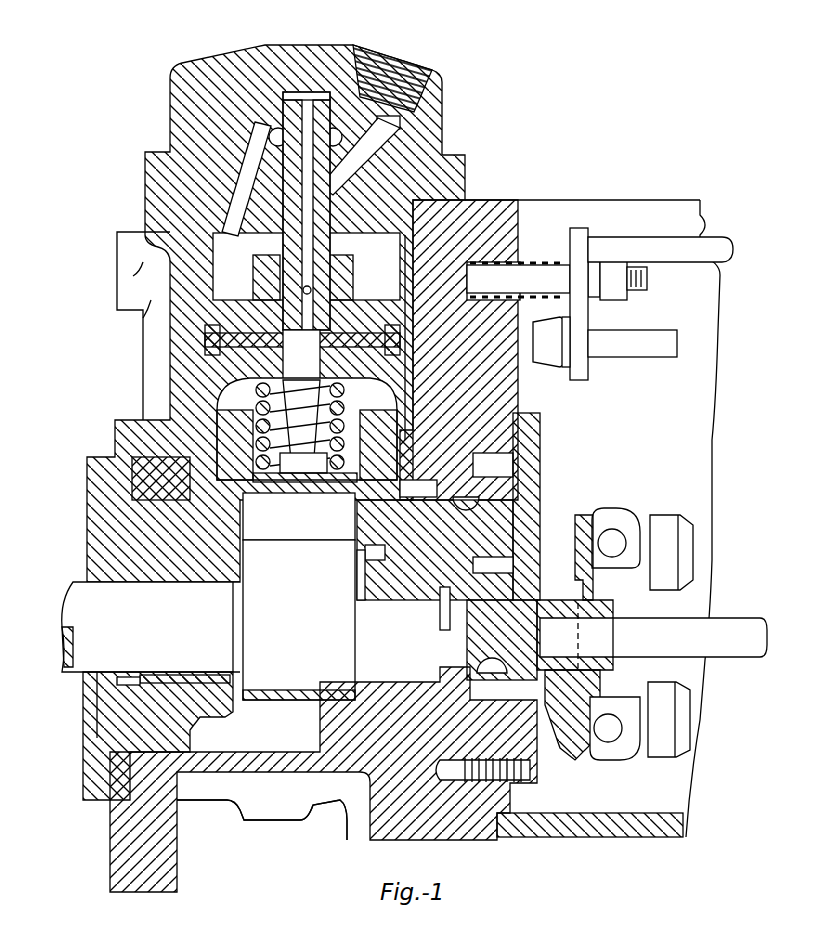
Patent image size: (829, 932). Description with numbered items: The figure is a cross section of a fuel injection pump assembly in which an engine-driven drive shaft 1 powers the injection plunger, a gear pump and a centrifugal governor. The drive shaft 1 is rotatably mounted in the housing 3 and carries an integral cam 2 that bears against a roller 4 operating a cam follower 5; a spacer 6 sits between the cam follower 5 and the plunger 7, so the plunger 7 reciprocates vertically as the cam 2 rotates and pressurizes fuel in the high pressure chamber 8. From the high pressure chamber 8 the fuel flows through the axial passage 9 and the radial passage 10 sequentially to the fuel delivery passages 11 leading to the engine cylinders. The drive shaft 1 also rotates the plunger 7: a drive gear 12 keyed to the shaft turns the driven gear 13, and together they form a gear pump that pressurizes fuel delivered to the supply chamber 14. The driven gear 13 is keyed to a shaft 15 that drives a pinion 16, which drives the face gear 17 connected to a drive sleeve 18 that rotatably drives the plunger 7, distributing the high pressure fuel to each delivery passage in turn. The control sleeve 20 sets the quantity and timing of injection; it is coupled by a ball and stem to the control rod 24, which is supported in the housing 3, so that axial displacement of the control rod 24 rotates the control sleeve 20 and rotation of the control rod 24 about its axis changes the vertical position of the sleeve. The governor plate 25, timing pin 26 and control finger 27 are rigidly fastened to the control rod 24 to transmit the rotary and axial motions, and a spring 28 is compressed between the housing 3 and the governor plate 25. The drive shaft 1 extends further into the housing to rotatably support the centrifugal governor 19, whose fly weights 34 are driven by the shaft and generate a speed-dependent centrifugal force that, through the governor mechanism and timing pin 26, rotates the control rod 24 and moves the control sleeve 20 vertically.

The drive shaft 1 is at (80, 608).
The cam 2 is at (243, 632).
The housing 3 is at (110, 851).
The roller 4 is at (276, 541).
The cam follower 5 is at (232, 450).
The spacer 6 is at (298, 483).
The plunger 7 is at (290, 328).
The high pressure chamber 8 is at (312, 94).
The axial passage 9 is at (300, 121).
The radial passage 10 is at (320, 190).
The fuel delivery passages 11 is at (337, 163).
The drive gear 12 is at (475, 592).
The driven gear 13 is at (513, 478).
The supply chamber 14 is at (218, 285).
The shaft 15 is at (410, 488).
The pinion 16 is at (390, 560).
The face gear 17 is at (397, 407).
The drive sleeve 18 is at (335, 347).
The centrifugal governor 19 is at (619, 498).
The control sleeve 20 is at (258, 262).
The control rod 24 is at (533, 268).
The governor plate 25 is at (585, 316).
The timing pin 26 is at (648, 352).
The control finger 27 is at (660, 240).
The spring 28 is at (555, 262).
The fly weights 34 is at (665, 518).